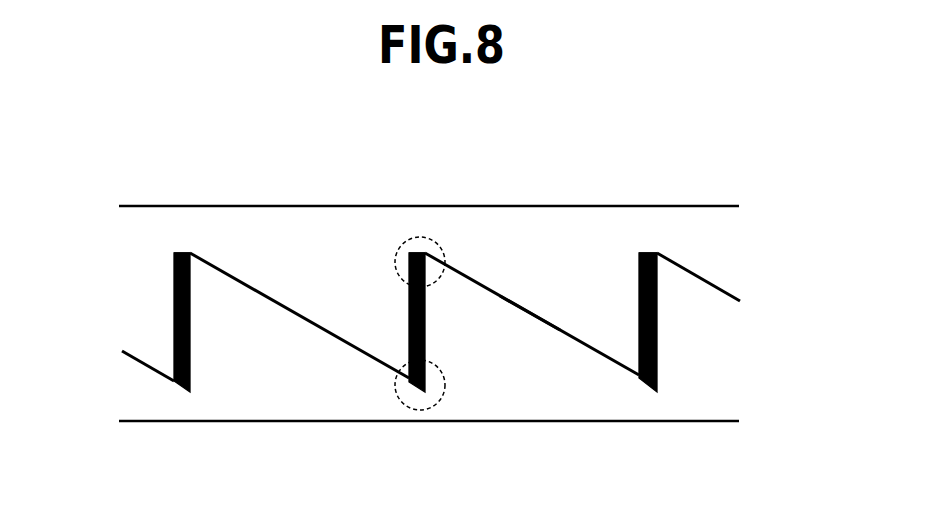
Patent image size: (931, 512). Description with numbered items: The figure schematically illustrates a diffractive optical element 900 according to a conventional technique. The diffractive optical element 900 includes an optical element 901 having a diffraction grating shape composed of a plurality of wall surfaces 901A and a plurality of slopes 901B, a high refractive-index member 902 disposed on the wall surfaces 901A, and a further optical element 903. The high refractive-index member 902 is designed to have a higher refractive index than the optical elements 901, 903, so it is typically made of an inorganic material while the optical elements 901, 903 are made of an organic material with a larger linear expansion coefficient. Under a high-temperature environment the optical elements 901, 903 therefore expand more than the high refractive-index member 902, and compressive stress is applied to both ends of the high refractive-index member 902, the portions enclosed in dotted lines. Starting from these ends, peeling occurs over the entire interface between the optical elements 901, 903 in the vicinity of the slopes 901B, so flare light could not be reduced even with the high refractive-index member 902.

The diffractive optical element 900 is at (782, 165).
The optical element 901 is at (148, 400).
The high refractive-index member 902 is at (172, 312).
The optical element 903 is at (148, 253).
The wall surfaces 901A is at (427, 332).
The slopes 901B is at (563, 337).